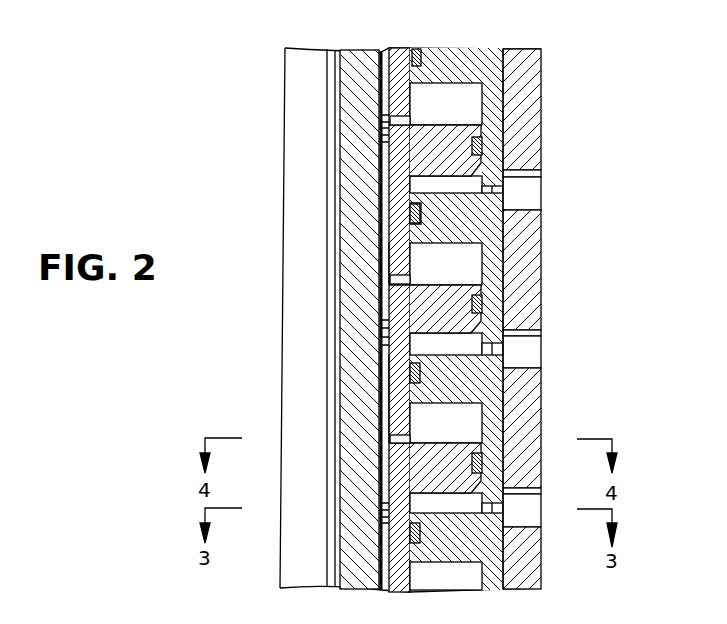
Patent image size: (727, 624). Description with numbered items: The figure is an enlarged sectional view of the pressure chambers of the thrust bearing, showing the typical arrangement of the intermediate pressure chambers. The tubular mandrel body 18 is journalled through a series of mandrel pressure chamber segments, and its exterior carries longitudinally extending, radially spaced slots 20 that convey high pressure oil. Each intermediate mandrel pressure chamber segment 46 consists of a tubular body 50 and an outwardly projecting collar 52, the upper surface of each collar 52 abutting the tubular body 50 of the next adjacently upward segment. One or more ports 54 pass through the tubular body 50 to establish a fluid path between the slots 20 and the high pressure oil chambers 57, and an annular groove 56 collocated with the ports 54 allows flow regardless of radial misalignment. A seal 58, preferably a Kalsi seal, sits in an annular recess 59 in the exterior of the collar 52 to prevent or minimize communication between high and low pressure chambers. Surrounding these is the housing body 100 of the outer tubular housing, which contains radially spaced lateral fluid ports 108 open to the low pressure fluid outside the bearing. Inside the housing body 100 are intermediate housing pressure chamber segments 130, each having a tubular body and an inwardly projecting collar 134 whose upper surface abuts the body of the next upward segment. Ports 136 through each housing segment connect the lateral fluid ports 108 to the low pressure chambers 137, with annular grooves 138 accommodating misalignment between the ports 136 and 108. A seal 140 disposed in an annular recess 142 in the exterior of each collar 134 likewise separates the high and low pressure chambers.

The tubular mandrel body 18 is at (357, 60).
The slots 20 is at (383, 97).
The intermediate mandrel pressure chamber segment 46 is at (400, 382).
The tubular body 50 is at (403, 186).
The collar 52 is at (427, 317).
The ports 54 is at (408, 278).
The annular groove 56 is at (390, 280).
The high pressure oil chambers 57 is at (472, 106).
The seal 58 is at (483, 147).
The annular recess 59 is at (385, 143).
The housing body 100 is at (527, 390).
The lateral fluid ports 108 is at (530, 357).
The intermediate housing pressure chamber segment 130 is at (490, 67).
The collar 134 is at (483, 212).
The ports 136 is at (503, 160).
The low pressure chambers 137 is at (427, 183).
The annular grooves 138 is at (483, 186).
The seal 140 is at (408, 217).
The annular recess 142 is at (421, 220).